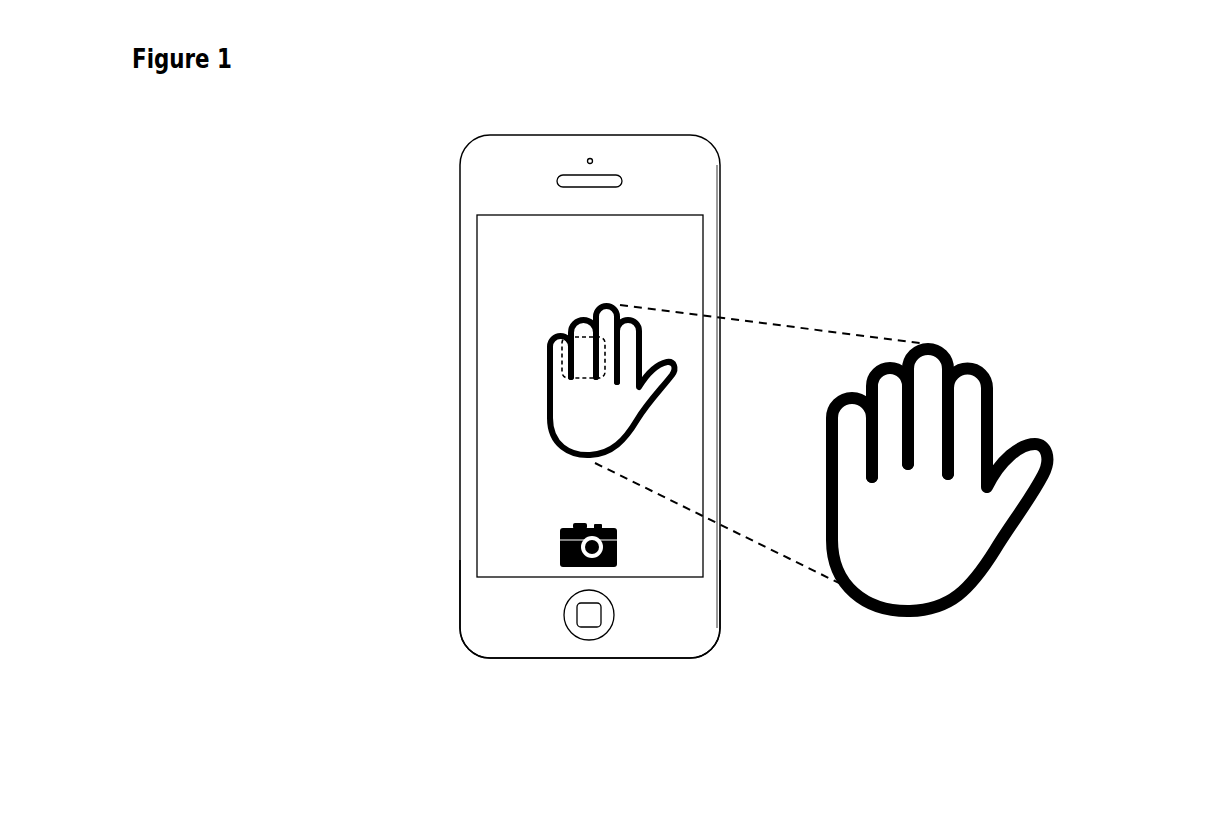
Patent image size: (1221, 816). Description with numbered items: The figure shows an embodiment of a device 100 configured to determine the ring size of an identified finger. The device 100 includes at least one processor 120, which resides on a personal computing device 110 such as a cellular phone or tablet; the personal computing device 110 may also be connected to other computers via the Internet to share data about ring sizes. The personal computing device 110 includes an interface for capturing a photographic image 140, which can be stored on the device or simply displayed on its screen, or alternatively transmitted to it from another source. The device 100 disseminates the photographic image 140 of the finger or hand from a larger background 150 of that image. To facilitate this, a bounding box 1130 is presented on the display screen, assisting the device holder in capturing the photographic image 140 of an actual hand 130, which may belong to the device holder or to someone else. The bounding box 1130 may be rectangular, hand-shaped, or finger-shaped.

The device 100 is at (1066, 202).
The personal computing device 110 is at (725, 260).
The processor 120 is at (717, 643).
The hand 130 is at (1005, 552).
The photographic image 140 is at (548, 362).
The background 150 is at (527, 263).
The bounding box 1130 is at (580, 380).